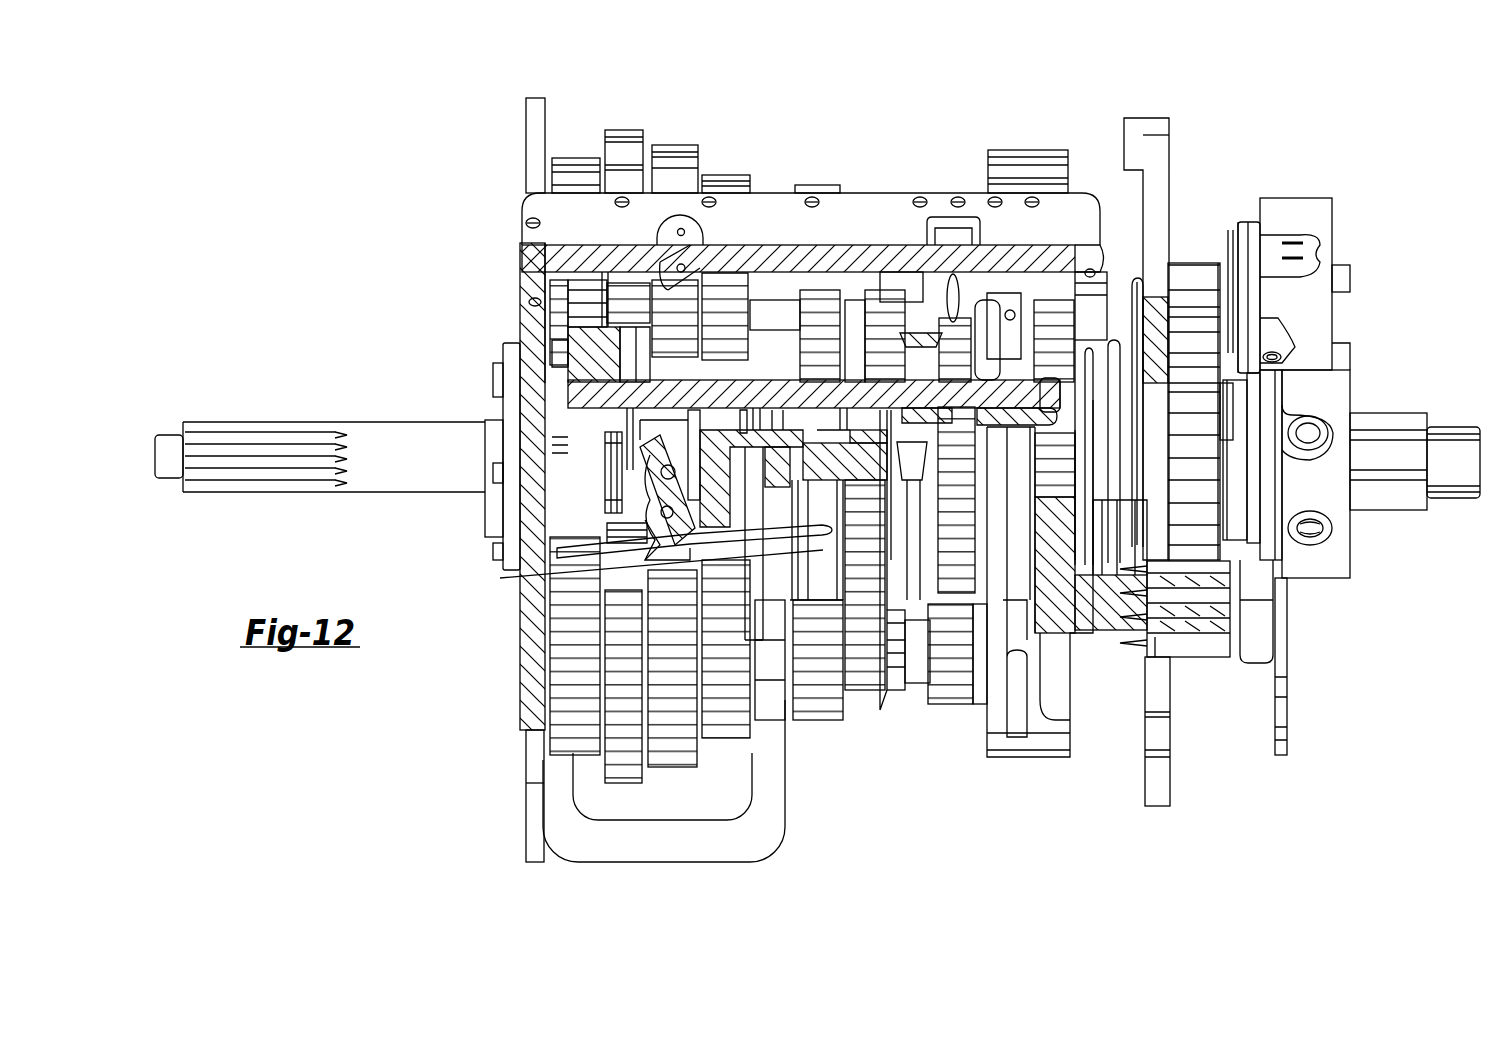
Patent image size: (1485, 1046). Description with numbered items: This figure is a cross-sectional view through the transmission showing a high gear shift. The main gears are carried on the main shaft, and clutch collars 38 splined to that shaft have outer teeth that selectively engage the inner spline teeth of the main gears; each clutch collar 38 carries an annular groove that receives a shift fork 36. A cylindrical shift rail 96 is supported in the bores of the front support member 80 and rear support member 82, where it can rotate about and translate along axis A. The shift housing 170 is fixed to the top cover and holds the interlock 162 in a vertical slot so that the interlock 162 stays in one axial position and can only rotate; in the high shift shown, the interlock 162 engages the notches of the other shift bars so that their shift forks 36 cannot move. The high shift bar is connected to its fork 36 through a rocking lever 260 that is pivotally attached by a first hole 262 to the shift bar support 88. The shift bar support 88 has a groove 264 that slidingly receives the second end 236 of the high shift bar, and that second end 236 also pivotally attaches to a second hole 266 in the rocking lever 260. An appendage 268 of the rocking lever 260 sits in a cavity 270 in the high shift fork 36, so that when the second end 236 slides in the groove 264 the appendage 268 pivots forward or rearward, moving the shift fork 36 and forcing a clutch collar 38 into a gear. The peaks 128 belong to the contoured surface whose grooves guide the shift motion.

The shift fork 36 is at (672, 362).
The clutch collar 38 is at (757, 497).
The front support member 80 is at (582, 340).
The rear support member 82 is at (1018, 375).
The shift bar support 88 is at (655, 482).
The shift rail 96 is at (875, 395).
The peaks 128 is at (648, 522).
The interlock 162 is at (865, 452).
The shift housing 170 is at (826, 470).
The second end of the high shift bar 236 is at (672, 528).
The rocking lever 260 is at (668, 440).
The first hole 262 is at (630, 457).
The groove 264 is at (650, 545).
The second hole 266 is at (662, 512).
The appendage 268 is at (590, 393).
The cavity 270 is at (655, 425).